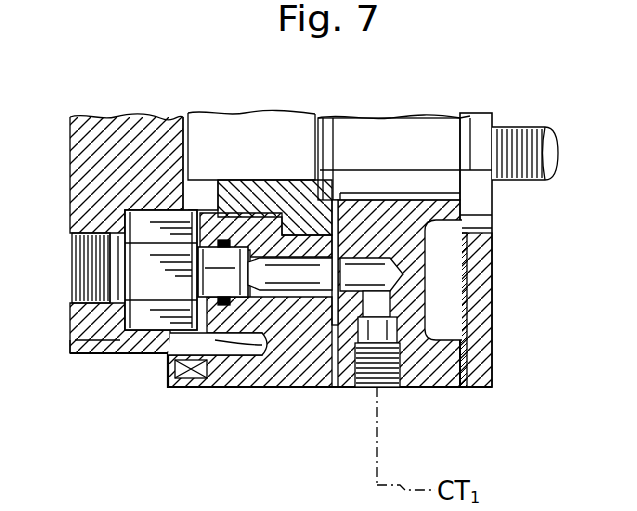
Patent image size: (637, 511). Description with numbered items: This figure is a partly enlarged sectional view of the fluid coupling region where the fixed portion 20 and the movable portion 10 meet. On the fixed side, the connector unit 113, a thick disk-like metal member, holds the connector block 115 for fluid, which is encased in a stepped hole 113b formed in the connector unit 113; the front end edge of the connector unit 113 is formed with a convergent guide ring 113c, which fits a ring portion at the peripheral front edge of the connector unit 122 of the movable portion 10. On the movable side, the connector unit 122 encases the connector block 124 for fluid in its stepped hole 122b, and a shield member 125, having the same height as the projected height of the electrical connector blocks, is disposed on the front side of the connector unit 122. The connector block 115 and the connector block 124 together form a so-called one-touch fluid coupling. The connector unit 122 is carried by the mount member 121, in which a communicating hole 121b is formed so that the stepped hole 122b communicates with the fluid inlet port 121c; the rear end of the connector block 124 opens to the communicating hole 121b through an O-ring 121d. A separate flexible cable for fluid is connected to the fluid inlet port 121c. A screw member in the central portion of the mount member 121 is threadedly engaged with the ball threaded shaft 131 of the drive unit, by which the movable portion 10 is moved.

The movable portion 10 is at (495, 303).
The fixed portion 20 is at (70, 345).
The connector unit 113 is at (97, 352).
The stepped hole 113b is at (157, 208).
The convergent guide ring 113c is at (220, 358).
The connector block for fluid 115 is at (157, 318).
The mount member 121 is at (436, 388).
The communicating hole 121b is at (388, 250).
The fluid inlet port 121c is at (367, 392).
The O-ring 121d is at (336, 210).
The connector unit 122 is at (290, 390).
The stepped hole 122b is at (258, 203).
The connector block for fluid 124 is at (262, 392).
The shield member 125 is at (206, 180).
The ball threaded shaft 131 is at (518, 127).